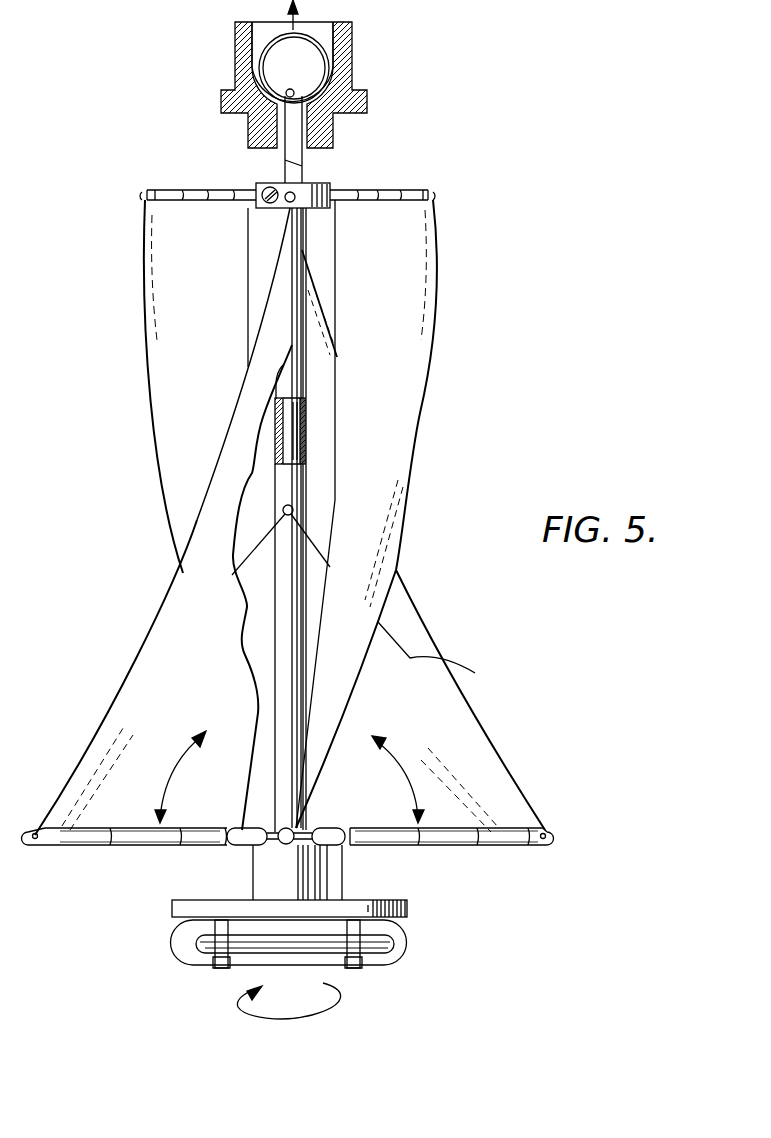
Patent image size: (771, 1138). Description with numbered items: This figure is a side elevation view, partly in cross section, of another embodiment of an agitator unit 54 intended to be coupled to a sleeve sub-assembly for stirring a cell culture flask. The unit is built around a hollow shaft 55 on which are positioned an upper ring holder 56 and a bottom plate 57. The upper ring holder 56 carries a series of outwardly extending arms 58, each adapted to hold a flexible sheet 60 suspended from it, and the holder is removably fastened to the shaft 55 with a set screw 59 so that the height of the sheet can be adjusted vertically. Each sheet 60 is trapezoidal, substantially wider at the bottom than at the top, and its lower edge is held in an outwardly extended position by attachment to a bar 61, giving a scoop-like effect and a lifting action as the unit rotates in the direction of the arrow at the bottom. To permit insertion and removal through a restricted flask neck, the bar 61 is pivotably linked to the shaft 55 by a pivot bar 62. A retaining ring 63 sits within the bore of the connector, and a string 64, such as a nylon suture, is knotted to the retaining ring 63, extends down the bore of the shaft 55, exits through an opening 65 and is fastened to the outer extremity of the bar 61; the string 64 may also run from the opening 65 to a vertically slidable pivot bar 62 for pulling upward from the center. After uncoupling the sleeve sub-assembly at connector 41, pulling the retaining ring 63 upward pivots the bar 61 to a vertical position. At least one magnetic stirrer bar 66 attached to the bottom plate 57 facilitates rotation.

The connector 41 is at (235, 52).
The retaining ring 63 is at (262, 76).
The string 64 is at (290, 138).
The outwardly extending arms 58 is at (285, 188).
The set screw 59 is at (266, 190).
The upper ring holder 56 is at (325, 187).
The hollow shaft 55 is at (308, 380).
The flexible sheet 60 is at (420, 352).
The opening 65 is at (296, 503).
The agitator unit 54 is at (432, 478).
The bar 61 is at (280, 842).
The pivot bar 62 is at (278, 829).
The bottom plate 57 is at (378, 902).
The magnetic stirrer bar 66 is at (407, 933).